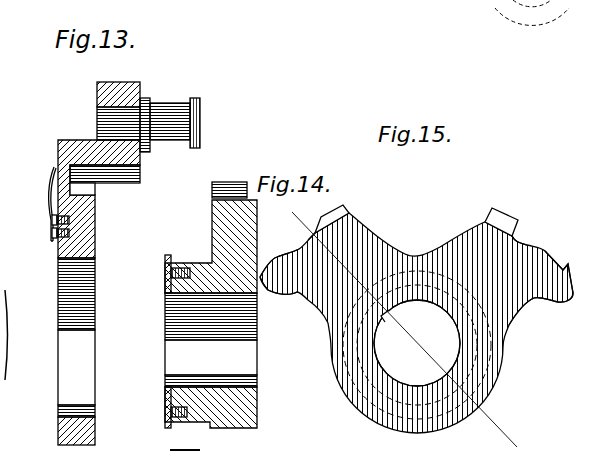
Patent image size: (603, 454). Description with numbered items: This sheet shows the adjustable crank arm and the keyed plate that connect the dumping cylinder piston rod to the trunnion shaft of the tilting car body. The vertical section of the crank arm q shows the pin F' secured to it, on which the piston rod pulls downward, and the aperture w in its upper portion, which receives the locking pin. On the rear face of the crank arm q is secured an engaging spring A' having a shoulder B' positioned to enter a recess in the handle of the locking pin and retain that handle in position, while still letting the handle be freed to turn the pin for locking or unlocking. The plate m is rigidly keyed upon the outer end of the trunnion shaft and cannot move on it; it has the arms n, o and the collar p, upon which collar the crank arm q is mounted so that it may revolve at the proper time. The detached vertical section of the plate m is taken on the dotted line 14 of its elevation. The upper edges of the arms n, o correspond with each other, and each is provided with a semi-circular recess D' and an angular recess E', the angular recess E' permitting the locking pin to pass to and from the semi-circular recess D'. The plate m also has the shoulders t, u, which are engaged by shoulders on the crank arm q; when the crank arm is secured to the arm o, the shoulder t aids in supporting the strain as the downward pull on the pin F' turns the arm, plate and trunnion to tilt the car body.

In FIG. 13, the pin F' is at (148, 117).
In FIG. 13, the crank arm q is at (99, 292).
In FIG. 13, the aperture w is at (96, 189).
In FIG. 13, the shoulder B' is at (36, 204).
In FIG. 13, the engaging spring A' is at (40, 221).
In FIG. 14, the semi-circular recess D' is at (229, 172).
In FIG. 15, the semi-circular recess D' is at (420, 234).
In FIG. 14, the arm n is at (212, 214).
In FIG. 15, the arm n is at (416, 323).
In FIG. 14, the plate m is at (211, 360).
In FIG. 15, the plate m is at (431, 345).
In FIG. 14, the collar p is at (181, 267).
In FIG. 15, the shoulder u is at (279, 266).
In FIG. 15, the angular recess E' is at (416, 207).
In FIG. 15, the shoulder t is at (563, 272).
In FIG. 15, the arm o is at (541, 309).
In FIG. 15, the section line 14 is at (404, 329).